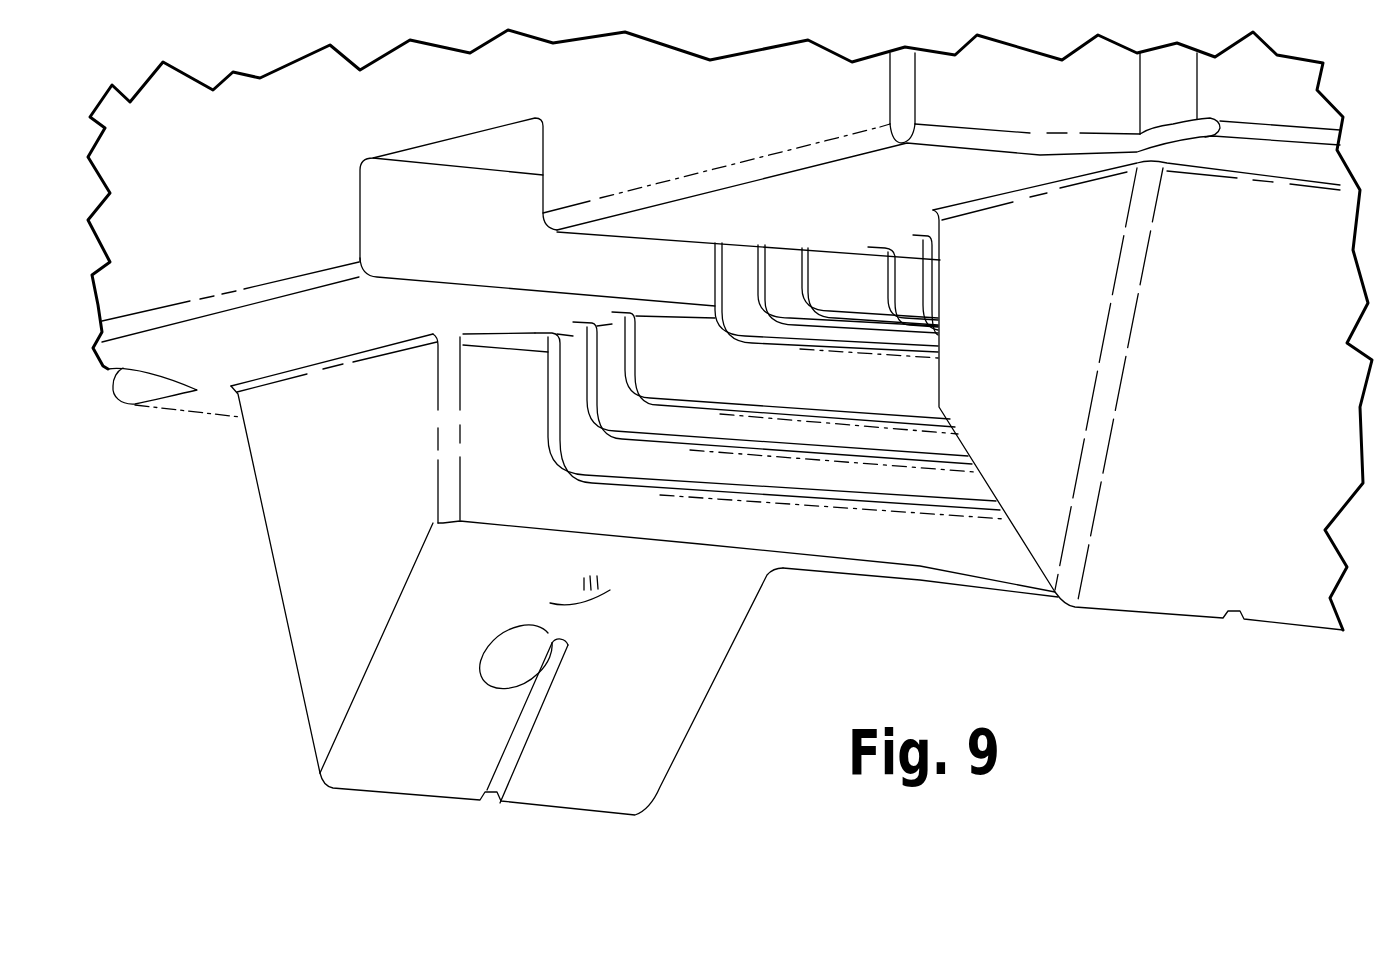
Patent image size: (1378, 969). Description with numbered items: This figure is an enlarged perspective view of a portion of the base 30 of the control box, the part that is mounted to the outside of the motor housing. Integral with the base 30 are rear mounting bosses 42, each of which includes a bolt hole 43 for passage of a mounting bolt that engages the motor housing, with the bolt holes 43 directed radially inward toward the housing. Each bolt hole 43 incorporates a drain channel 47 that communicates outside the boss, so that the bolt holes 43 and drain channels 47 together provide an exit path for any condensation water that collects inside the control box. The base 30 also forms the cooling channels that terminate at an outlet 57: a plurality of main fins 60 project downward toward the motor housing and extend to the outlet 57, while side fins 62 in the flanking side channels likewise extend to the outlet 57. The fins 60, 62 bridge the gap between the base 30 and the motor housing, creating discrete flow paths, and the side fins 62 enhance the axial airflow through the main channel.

The base 30 is at (137, 405).
The outlet 57 is at (392, 212).
The rear mounting boss 42 is at (660, 730).
The bolt hole 43 is at (577, 608).
The drain channel 47 is at (502, 762).
The main fin 60 is at (828, 283).
The side fin 62 is at (905, 277).